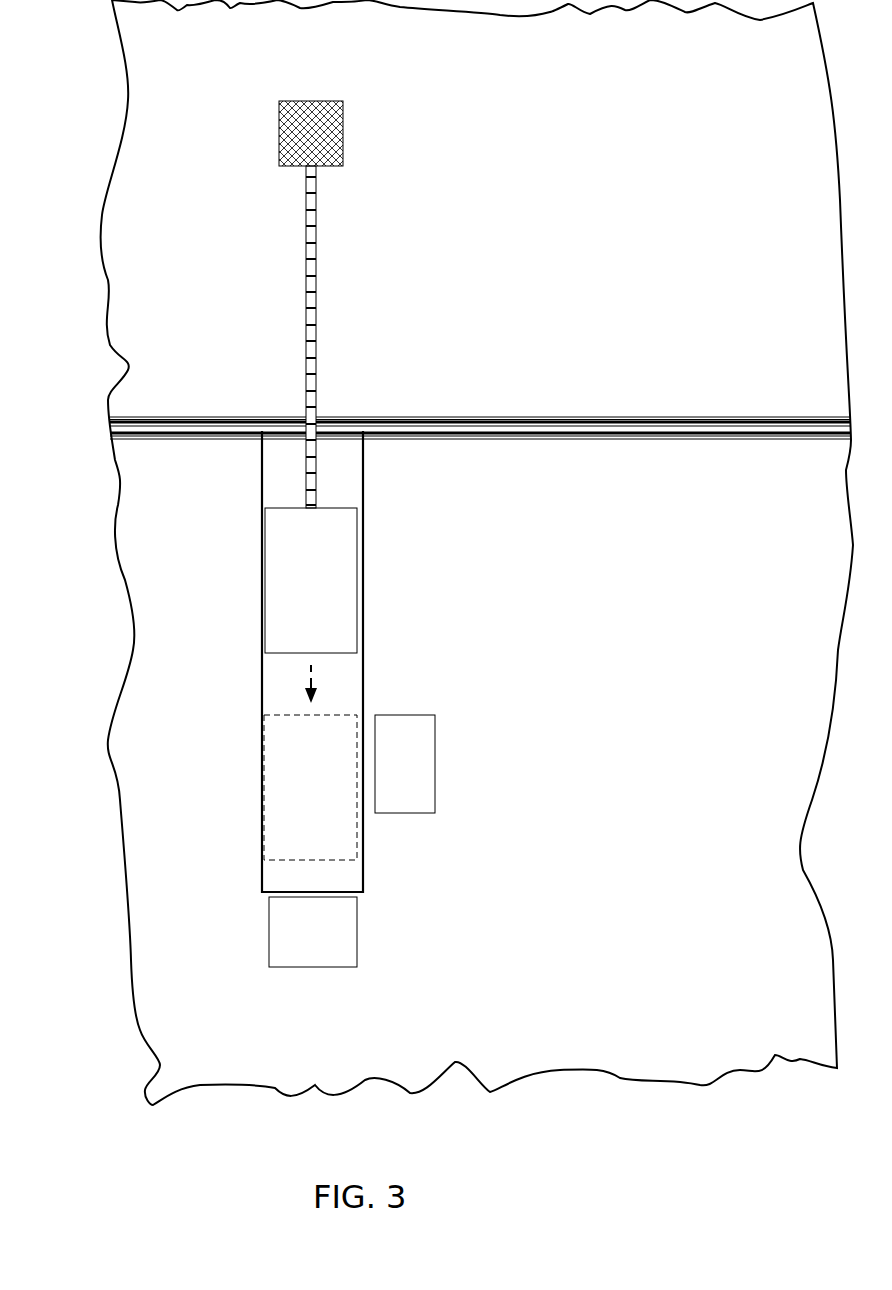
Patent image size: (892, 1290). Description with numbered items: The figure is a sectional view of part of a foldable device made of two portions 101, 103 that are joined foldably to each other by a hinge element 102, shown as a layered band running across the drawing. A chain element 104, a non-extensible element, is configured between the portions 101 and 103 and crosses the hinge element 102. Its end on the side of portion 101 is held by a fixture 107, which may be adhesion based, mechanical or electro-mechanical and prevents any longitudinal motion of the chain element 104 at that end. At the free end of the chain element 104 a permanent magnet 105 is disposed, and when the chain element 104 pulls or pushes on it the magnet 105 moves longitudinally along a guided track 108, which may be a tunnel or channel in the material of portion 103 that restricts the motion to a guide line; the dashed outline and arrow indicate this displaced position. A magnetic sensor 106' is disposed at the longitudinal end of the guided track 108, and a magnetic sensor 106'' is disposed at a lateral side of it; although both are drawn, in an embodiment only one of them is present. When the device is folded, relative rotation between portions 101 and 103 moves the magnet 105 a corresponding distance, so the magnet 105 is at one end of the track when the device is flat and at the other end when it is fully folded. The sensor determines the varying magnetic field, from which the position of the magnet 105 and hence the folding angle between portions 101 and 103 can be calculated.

The portion 101 is at (125, 227).
The hinge element 102 is at (112, 433).
The portion 103 is at (150, 1040).
The chain element 104 is at (318, 243).
The permanent magnet 105 is at (290, 590).
The magnetic sensor 106' is at (352, 926).
The magnetic sensor 106'' is at (455, 764).
The fixture 107 is at (345, 123).
The guided track 108 is at (363, 675).